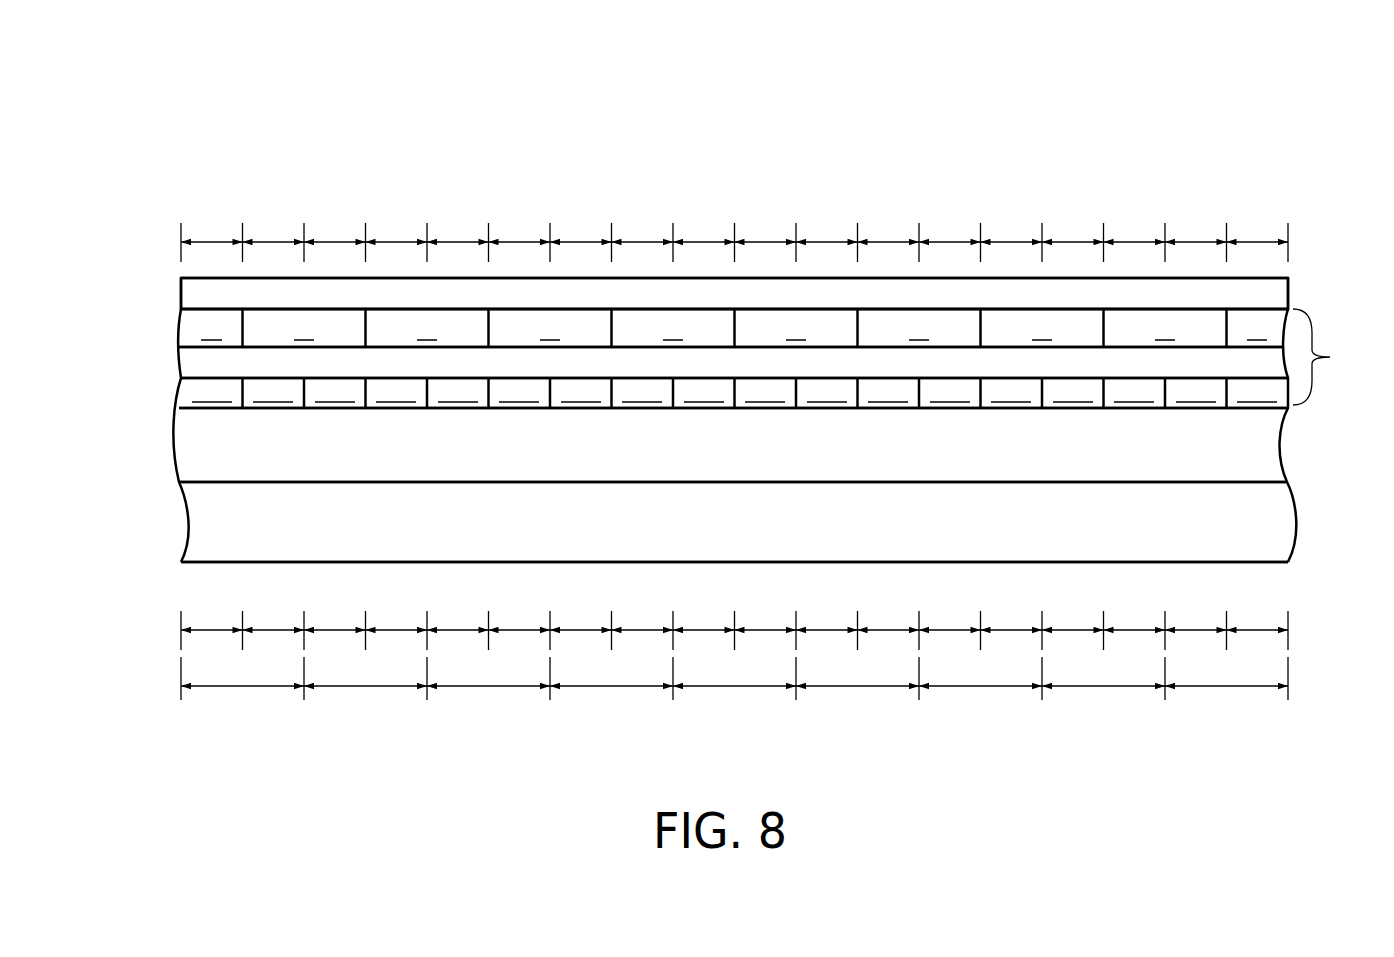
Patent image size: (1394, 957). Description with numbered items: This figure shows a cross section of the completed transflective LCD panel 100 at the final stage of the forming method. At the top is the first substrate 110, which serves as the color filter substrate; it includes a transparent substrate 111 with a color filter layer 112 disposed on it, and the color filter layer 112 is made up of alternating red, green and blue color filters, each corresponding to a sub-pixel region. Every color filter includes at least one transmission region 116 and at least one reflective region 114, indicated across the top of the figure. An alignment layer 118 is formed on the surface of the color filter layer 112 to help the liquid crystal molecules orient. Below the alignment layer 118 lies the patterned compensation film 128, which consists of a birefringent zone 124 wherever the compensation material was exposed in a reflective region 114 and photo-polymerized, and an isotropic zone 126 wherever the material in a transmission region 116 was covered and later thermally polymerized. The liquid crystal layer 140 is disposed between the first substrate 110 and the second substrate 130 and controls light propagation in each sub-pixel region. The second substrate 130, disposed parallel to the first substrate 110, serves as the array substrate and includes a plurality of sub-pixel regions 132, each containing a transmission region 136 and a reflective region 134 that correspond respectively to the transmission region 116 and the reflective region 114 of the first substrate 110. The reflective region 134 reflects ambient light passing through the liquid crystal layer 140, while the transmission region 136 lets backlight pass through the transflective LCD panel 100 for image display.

The transflective LCD panel 100 is at (236, 146).
The first substrate 110 is at (1330, 357).
The transparent substrate 111 is at (193, 289).
The color filter layer 112 is at (172, 333).
The reflective region 114 is at (766, 228).
The transmission region 116 is at (704, 228).
The alignment layer 118 is at (192, 359).
The birefringent zone 124 is at (765, 393).
The isotropic zone 126 is at (709, 393).
The patterned compensation film 128 is at (170, 393).
The second substrate 130 is at (202, 513).
The sub-pixel regions 132 is at (734, 678).
The reflective region 134 is at (766, 615).
The transmission region 136 is at (704, 615).
The liquid crystal layer 140 is at (192, 442).